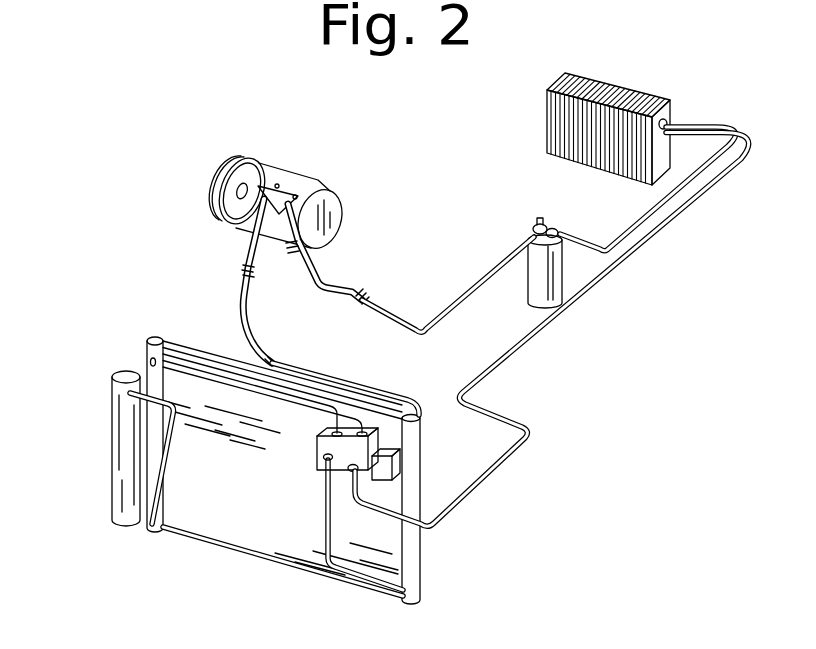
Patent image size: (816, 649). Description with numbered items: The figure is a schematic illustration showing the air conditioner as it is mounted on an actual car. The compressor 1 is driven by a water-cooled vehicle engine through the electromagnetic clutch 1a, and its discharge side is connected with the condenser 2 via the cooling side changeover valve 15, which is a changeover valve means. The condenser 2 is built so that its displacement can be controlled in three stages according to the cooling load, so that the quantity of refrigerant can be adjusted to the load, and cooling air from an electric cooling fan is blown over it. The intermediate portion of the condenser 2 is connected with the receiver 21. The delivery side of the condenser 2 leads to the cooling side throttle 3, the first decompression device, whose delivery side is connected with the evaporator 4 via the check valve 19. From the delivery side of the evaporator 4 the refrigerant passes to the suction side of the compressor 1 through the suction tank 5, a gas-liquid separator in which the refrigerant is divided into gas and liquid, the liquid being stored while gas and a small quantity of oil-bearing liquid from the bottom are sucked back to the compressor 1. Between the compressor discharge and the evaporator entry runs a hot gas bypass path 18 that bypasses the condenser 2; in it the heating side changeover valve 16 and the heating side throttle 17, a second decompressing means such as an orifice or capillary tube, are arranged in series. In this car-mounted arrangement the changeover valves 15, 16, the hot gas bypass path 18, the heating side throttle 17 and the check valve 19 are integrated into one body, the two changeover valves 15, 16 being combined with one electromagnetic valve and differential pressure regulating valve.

The compressor 1 is at (259, 231).
The electromagnetic clutch 1a is at (221, 188).
The condenser 2 is at (257, 532).
The cooling side throttle 3 is at (327, 525).
The evaporator 4 is at (547, 103).
The suction tank 5 is at (548, 285).
The cooling side changeover valve 15 is at (517, 463).
The heating side changeover valve 16 is at (349, 434).
The heating side throttle 17 is at (328, 457).
The hot gas bypass path 18 is at (353, 468).
The check valve 19 is at (400, 468).
The receiver 21 is at (118, 428).